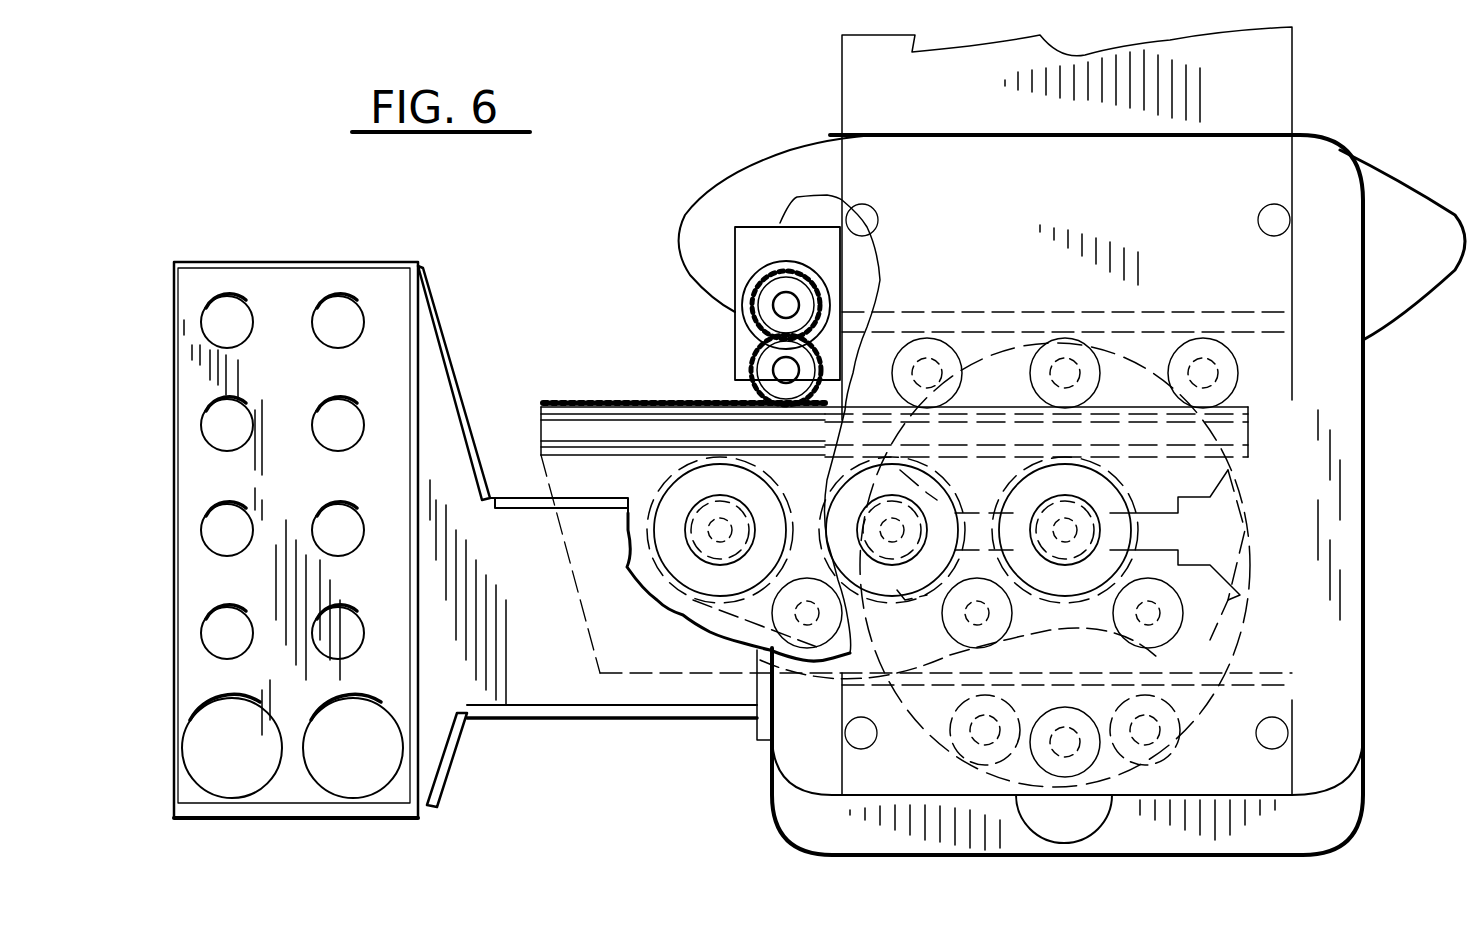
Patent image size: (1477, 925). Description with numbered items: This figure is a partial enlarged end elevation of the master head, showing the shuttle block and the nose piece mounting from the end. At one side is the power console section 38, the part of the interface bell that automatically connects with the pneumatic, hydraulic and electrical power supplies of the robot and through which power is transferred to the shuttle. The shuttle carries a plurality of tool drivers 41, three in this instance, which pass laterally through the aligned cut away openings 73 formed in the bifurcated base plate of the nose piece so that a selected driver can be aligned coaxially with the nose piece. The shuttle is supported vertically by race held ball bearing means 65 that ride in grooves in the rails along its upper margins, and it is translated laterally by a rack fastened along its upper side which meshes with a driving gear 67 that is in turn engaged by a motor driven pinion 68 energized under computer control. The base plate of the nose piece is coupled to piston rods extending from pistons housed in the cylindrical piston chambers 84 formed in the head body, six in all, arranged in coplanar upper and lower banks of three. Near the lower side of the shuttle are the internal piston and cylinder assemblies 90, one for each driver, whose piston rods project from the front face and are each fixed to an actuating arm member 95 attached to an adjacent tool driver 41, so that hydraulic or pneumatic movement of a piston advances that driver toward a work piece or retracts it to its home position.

The power console section 38 is at (453, 286).
The race held ball bearing means 65 is at (612, 398).
The driving gear 67 is at (786, 370).
The motor driven pinion 68 is at (786, 305).
The tool drivers 41 is at (750, 495).
The cut away openings 73 is at (940, 475).
The cylindrical piston chambers 84 is at (1063, 808).
The piston and cylinder assemblies 90 is at (946, 622).
The actuating arm member 95 is at (1092, 632).